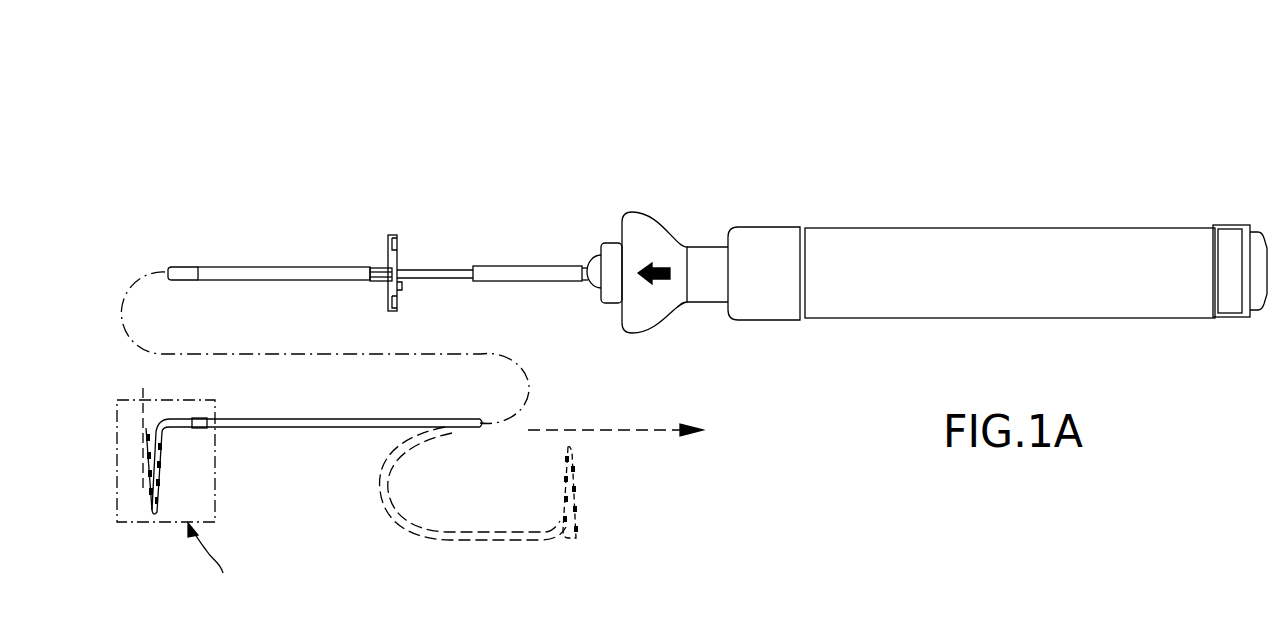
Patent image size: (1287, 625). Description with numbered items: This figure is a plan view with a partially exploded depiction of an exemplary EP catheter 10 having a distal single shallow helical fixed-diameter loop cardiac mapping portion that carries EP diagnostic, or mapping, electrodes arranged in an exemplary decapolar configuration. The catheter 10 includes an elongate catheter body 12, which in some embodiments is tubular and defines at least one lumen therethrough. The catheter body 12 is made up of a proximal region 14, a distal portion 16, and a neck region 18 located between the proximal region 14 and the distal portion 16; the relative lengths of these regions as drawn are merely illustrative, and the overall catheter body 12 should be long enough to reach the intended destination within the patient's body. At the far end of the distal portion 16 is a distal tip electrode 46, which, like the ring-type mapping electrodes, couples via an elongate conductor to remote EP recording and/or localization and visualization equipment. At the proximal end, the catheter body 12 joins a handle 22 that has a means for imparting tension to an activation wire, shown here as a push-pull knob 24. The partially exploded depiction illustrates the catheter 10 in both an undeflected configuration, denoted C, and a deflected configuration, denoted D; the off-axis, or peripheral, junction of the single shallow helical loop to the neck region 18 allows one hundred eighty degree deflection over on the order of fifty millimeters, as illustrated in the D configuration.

The EP catheter 10 is at (474, 170).
The catheter body 12 is at (229, 262).
The proximal region 14 is at (365, 437).
The distal portion 16 is at (152, 507).
The neck region 18 is at (203, 417).
The handle 22 is at (955, 328).
The push-pull knob 24 is at (660, 219).
The distal tip electrode 46 is at (577, 532).
The undeflected configuration C is at (98, 408).
The deflected configuration D is at (620, 501).